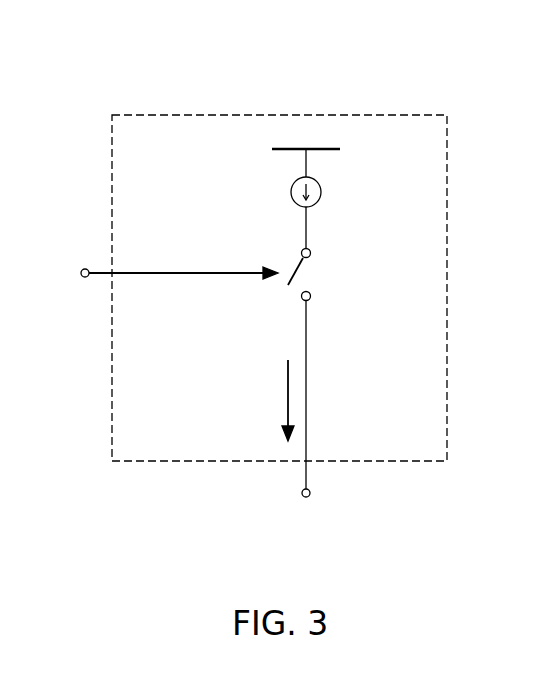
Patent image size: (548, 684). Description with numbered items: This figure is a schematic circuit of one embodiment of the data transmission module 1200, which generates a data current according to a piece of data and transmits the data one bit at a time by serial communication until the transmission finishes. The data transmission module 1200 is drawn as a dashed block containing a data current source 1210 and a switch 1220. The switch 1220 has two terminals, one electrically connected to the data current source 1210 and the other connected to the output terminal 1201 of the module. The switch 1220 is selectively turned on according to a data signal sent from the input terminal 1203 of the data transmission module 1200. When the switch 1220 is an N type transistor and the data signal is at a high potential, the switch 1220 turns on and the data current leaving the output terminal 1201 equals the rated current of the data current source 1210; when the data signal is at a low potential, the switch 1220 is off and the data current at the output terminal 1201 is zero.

The data transmission module 1200 is at (132, 113).
The data current source 1210 is at (316, 203).
The switch 1220 is at (312, 273).
The input terminal 1203 is at (81, 269).
The output terminal 1201 is at (310, 496).